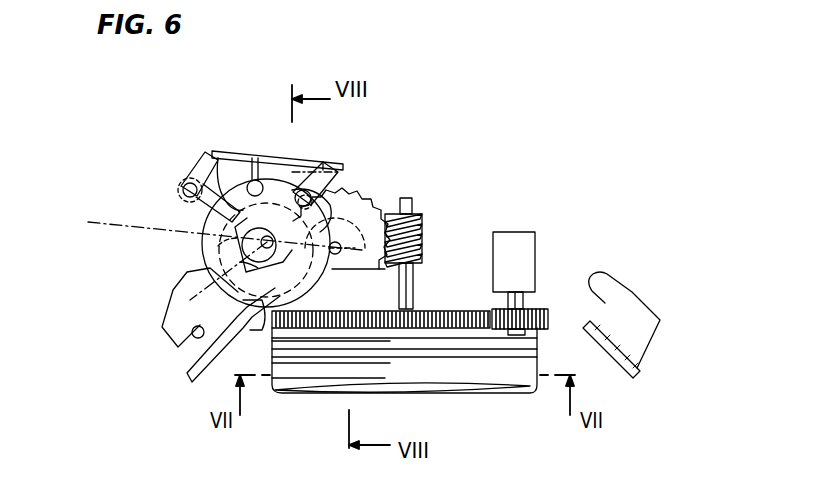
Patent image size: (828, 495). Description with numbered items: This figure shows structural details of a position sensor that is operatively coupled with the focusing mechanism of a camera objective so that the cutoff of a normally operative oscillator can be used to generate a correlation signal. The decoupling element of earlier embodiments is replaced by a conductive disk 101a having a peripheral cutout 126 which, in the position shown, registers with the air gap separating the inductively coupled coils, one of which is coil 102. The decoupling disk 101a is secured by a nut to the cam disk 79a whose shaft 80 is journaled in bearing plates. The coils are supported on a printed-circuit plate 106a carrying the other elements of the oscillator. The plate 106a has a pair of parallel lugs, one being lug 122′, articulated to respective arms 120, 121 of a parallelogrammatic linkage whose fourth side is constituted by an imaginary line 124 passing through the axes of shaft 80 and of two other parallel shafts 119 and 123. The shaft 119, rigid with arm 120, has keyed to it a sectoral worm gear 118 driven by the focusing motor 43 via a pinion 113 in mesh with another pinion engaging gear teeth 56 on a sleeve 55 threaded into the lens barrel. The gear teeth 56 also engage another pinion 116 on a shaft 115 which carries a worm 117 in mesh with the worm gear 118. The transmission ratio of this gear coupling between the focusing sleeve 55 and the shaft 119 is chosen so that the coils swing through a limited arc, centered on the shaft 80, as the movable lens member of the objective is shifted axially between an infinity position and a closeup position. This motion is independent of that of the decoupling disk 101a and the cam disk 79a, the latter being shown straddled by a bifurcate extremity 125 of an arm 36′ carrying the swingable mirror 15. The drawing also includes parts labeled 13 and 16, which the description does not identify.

The cutter blade holder 13 is at (640, 362).
The mirror 15 is at (192, 377).
The pivot hole 16 is at (192, 336).
The arm 36′ is at (190, 311).
The focusing motor 43 is at (536, 247).
The sleeve 55 is at (476, 367).
The gear teeth 56 is at (457, 309).
The cam disk 79a is at (240, 263).
The shaft 80 is at (290, 250).
The conductive disk 101a is at (232, 219).
The coil 102 is at (277, 163).
The printed-circuit plate 106a is at (243, 158).
The pinion 113 is at (525, 319).
The shaft 115 is at (407, 210).
The pinion 116 is at (416, 310).
The worm 117 is at (424, 225).
The sectoral worm gear 118 is at (340, 235).
The shaft 119 is at (352, 237).
The arm 120 is at (322, 215).
The arm 121 is at (200, 203).
The lug 122′ is at (310, 172).
The shaft 123 is at (218, 249).
The imaginary line 124 is at (103, 223).
The bifurcate extremity 125 is at (248, 308).
The peripheral cutout 126 is at (218, 153).